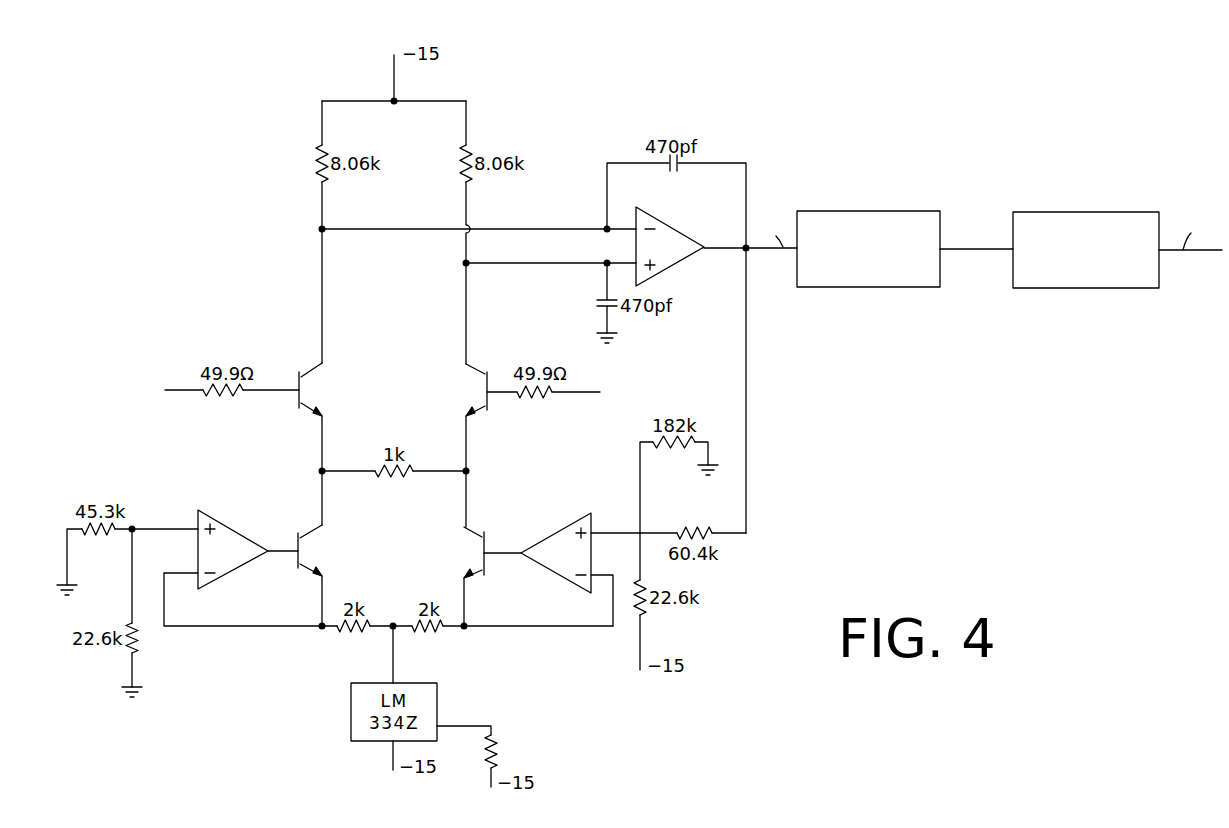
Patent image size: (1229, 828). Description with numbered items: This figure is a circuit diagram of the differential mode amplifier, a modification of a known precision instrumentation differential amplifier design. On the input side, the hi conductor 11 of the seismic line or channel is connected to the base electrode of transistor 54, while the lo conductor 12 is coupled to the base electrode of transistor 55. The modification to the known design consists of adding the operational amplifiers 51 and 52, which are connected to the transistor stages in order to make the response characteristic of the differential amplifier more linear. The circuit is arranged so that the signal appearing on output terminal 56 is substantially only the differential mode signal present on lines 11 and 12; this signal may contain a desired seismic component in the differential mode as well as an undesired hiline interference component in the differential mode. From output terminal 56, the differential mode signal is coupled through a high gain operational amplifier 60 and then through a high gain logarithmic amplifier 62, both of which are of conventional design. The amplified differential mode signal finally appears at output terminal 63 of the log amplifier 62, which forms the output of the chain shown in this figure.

The hi conductor 11 is at (175, 392).
The lo conductor 12 is at (567, 393).
The operational amplifier 51 is at (562, 532).
The operational amplifier 52 is at (235, 529).
The transistor 54 is at (323, 383).
The transistor 55 is at (462, 383).
The output terminal 56 is at (762, 251).
The operational amplifier 60 is at (847, 211).
The logarithmic amplifier 62 is at (1067, 212).
The output terminal 63 is at (1168, 252).